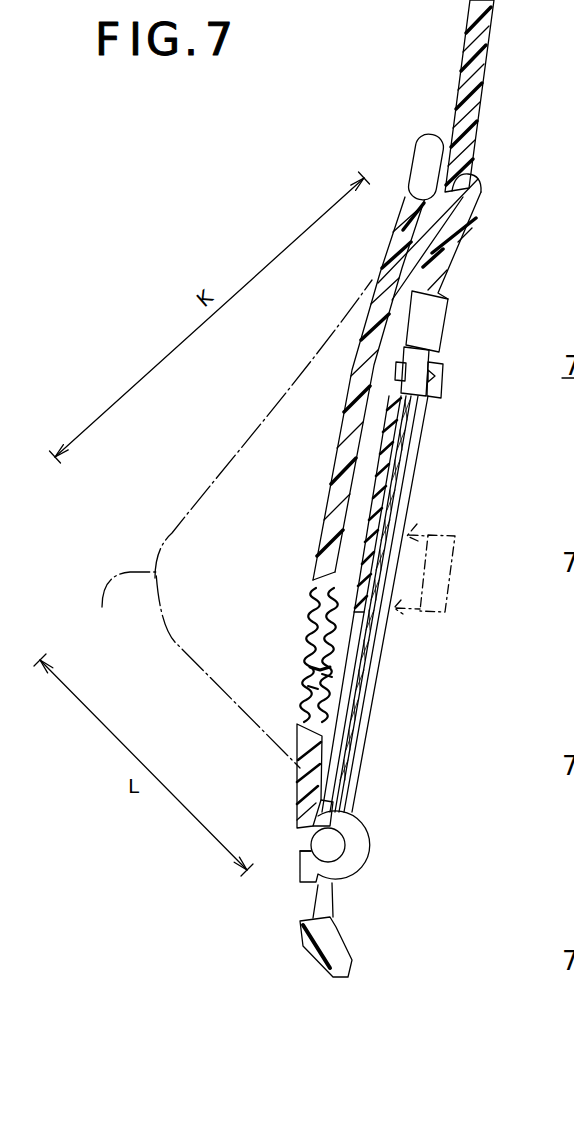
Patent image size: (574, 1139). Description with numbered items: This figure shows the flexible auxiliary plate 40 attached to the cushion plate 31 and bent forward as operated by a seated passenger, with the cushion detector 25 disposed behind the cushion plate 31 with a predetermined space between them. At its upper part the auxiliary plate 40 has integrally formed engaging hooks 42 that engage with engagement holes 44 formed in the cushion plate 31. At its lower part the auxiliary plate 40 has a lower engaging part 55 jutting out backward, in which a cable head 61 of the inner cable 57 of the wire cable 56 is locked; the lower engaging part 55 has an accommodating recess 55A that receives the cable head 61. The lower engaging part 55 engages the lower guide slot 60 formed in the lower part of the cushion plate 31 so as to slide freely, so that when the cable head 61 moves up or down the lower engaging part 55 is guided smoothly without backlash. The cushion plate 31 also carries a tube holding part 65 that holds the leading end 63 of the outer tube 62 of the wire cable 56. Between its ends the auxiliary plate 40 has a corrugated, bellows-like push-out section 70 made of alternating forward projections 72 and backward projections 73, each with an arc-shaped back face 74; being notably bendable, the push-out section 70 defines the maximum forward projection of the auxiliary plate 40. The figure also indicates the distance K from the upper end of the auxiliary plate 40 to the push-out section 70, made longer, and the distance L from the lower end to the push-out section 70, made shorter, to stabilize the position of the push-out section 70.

The cushion plate 31 is at (488, 59).
The auxiliary plate 40 is at (340, 423).
The engaging hooks 42 is at (481, 178).
The engagement holes 44 is at (437, 266).
The outer tube 62 is at (437, 327).
The leading end 63 is at (423, 360).
The tube holding part 65 is at (450, 377).
The wire cable 56 is at (410, 479).
The backward projections 73 is at (332, 656).
The inner cable 57 is at (367, 672).
The lower guide slot 60 is at (360, 733).
The cushion detector 25 is at (455, 538).
The push-out section 70 is at (297, 639).
The forward projections 72 is at (310, 671).
The back face 74 is at (311, 686).
The cable head 61 is at (322, 844).
The lower engaging part 55 is at (369, 855).
The accommodating recess 55A is at (307, 850).